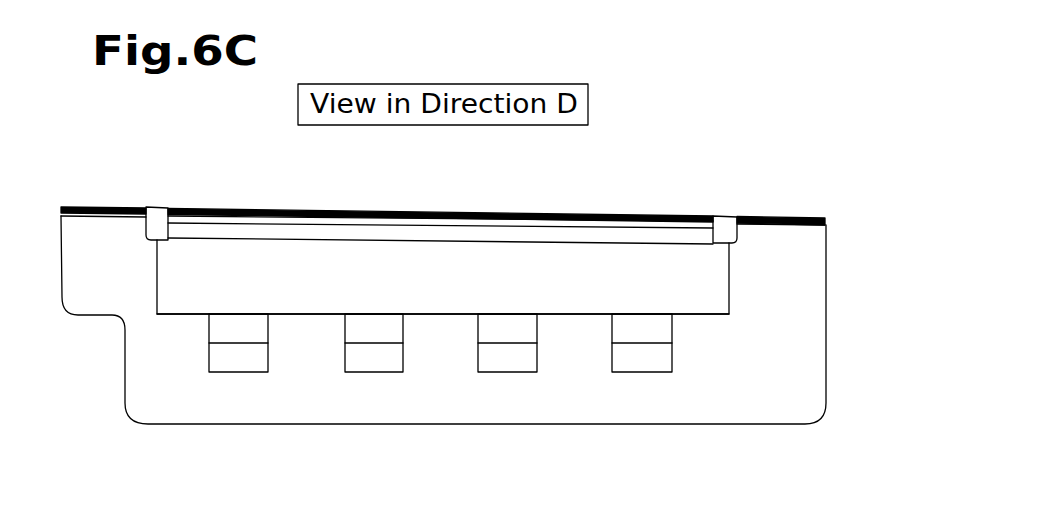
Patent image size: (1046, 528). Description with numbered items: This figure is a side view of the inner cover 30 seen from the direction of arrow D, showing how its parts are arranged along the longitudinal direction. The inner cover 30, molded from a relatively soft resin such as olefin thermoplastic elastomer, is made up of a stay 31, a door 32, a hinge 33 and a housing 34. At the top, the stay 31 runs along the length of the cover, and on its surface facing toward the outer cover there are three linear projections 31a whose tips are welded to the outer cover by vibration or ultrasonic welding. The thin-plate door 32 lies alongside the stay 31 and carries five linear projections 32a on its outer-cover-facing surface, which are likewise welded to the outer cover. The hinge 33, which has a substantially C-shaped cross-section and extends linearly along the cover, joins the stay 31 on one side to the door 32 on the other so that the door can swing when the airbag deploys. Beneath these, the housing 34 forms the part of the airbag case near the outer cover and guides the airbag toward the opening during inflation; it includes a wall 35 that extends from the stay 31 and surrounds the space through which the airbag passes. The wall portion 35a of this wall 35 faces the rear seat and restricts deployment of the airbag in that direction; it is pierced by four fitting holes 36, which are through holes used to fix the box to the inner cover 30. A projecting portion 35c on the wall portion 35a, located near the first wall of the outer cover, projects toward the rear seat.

The inner cover 30 is at (779, 154).
The stay 31 is at (157, 206).
The linear projections 31a is at (108, 206).
The door 32 is at (372, 224).
The linear projections 32a is at (441, 212).
The hinge 33 is at (276, 232).
The housing 34 is at (828, 283).
The wall 35 is at (797, 466).
The wall portion 35a is at (770, 418).
The projecting portion 35c is at (703, 308).
The fitting holes 36 is at (345, 360).